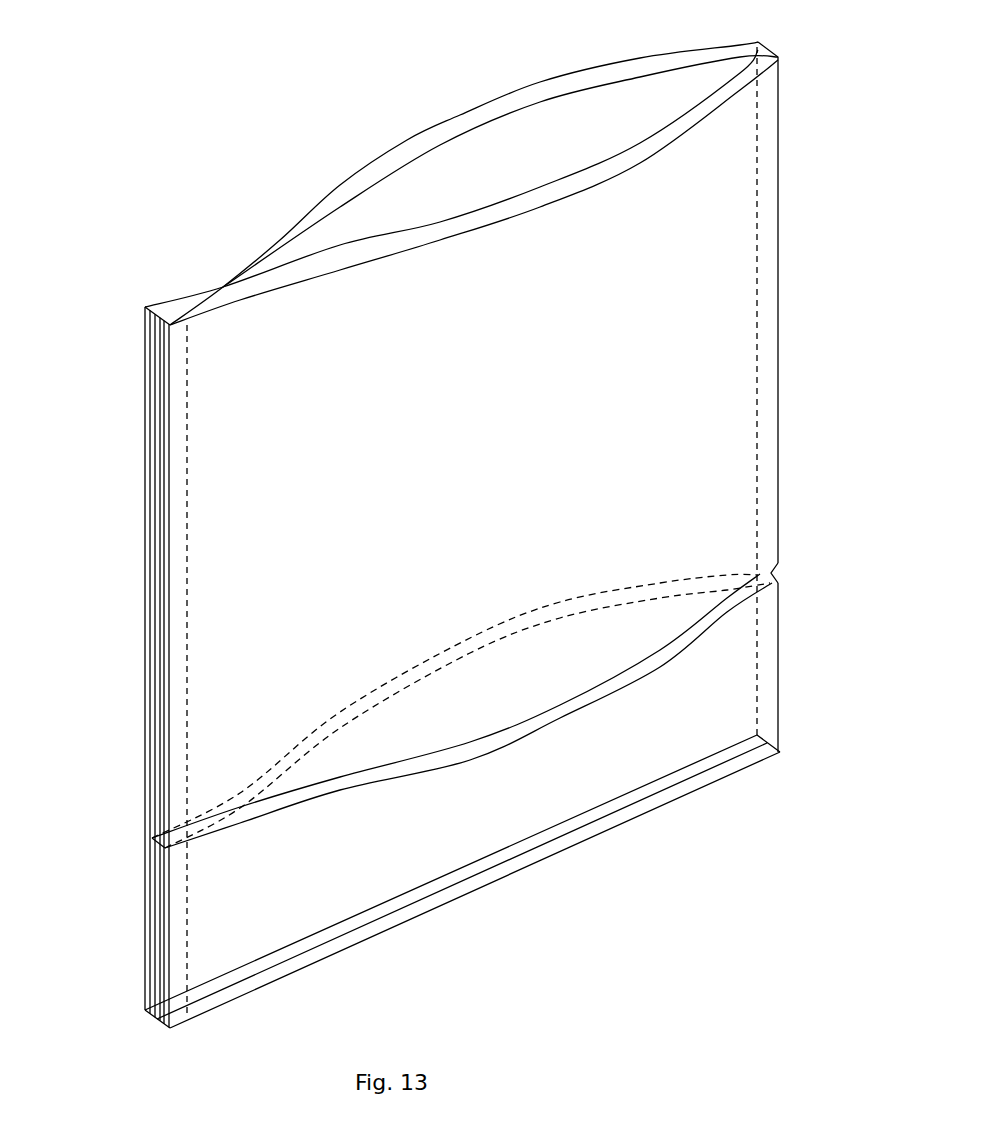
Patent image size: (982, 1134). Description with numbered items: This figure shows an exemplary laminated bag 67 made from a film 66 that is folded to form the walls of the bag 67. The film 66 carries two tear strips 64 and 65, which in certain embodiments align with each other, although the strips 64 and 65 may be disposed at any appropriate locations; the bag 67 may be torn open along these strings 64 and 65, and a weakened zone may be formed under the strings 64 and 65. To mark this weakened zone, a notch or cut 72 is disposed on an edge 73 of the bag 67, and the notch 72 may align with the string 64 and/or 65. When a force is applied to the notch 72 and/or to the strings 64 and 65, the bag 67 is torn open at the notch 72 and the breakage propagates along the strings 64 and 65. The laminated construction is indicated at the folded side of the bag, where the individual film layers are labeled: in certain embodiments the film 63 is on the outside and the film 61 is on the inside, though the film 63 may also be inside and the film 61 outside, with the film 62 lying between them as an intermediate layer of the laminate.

The film 61 is at (153, 495).
The second film layer 62 is at (150, 547).
The film 63 is at (145, 595).
The tear strip 64 is at (152, 843).
The tear strip 65 is at (152, 848).
The film 66 is at (457, 890).
The bag 67 is at (518, 312).
The notch 72 is at (773, 576).
The edge 73 is at (770, 399).